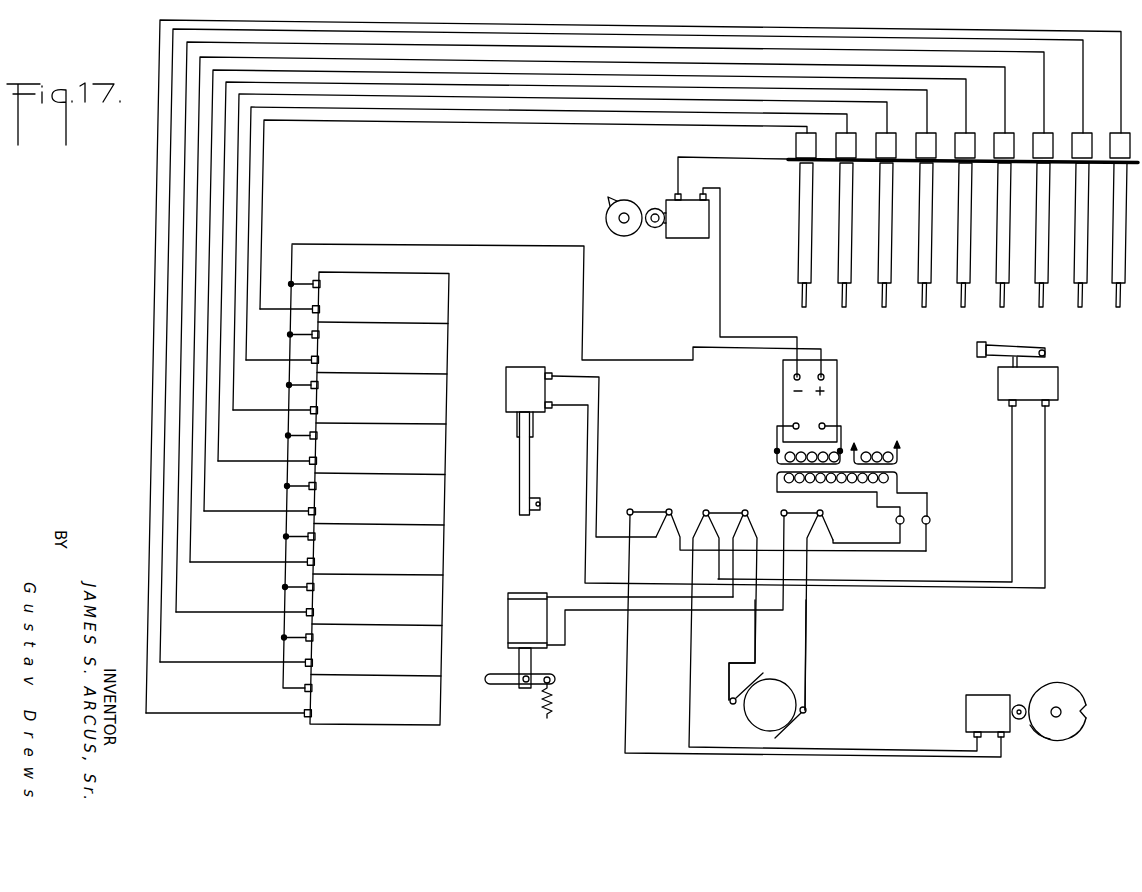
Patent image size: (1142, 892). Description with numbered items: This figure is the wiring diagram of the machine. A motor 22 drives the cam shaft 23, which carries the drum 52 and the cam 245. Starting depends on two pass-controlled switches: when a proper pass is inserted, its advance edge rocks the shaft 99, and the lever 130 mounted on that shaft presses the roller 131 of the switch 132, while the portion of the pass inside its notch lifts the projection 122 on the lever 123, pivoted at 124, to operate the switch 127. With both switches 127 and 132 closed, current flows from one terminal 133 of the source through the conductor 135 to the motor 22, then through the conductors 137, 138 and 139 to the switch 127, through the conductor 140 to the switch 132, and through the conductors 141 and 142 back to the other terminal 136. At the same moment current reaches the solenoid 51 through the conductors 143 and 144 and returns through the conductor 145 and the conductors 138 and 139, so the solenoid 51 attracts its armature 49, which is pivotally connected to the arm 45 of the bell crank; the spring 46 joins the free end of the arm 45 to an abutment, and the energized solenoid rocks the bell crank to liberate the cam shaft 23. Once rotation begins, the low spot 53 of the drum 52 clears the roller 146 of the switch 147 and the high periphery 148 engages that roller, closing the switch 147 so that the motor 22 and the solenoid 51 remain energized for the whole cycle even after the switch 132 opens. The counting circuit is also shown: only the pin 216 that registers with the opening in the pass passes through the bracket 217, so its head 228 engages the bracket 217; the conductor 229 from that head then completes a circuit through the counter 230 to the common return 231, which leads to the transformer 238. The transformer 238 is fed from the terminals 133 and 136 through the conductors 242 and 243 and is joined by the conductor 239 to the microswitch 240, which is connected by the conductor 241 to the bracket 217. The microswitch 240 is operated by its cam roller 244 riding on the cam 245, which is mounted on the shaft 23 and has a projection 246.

The motor 22 is at (748, 708).
The cam shaft 23 is at (614, 220).
The arm 45 is at (502, 684).
The spring 46 is at (553, 703).
The armature 49 is at (533, 663).
The solenoid 51 is at (504, 617).
The drum 52 is at (1072, 684).
The low spot 53 is at (1044, 740).
The shaft 99 is at (532, 511).
The projection 122 is at (976, 349).
The lever 123 is at (1010, 344).
The pivot 124 is at (1046, 353).
The switch 127 is at (1059, 380).
The lever 130 is at (531, 462).
The roller 131 is at (517, 427).
The switch 132 is at (520, 366).
The terminal 133 is at (895, 521).
The conductor 135 is at (810, 660).
The terminal 136 is at (932, 518).
The conductor 137 is at (754, 623).
The conductor 138 is at (728, 510).
The conductor 139 is at (922, 582).
The conductor 140 is at (925, 589).
The conductor 141 is at (600, 460).
The conductor 142 is at (672, 508).
The conductor 143 is at (797, 510).
The conductor 144 is at (570, 611).
The conductor 145 is at (561, 597).
The roller 146 is at (1021, 704).
The switch 147 is at (982, 696).
The high periphery 148 is at (1088, 712).
The pin 216 is at (878, 290).
The bracket 217 is at (790, 161).
The head 228 is at (1040, 132).
The conductor 229 is at (243, 612).
The counter 230 is at (445, 330).
The common return 231 is at (440, 243).
The transformer 238 is at (840, 400).
The conductor 239 is at (721, 300).
The microswitch 240 is at (697, 233).
The conductor 241 is at (713, 157).
The conductor 242 is at (832, 493).
The conductor 243 is at (918, 492).
The cam roller 244 is at (660, 230).
The cam 245 is at (632, 202).
The projection 246 is at (619, 197).